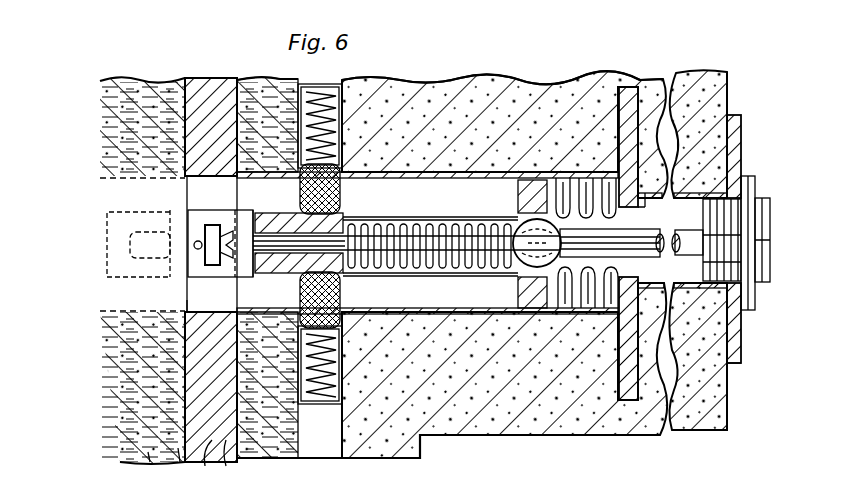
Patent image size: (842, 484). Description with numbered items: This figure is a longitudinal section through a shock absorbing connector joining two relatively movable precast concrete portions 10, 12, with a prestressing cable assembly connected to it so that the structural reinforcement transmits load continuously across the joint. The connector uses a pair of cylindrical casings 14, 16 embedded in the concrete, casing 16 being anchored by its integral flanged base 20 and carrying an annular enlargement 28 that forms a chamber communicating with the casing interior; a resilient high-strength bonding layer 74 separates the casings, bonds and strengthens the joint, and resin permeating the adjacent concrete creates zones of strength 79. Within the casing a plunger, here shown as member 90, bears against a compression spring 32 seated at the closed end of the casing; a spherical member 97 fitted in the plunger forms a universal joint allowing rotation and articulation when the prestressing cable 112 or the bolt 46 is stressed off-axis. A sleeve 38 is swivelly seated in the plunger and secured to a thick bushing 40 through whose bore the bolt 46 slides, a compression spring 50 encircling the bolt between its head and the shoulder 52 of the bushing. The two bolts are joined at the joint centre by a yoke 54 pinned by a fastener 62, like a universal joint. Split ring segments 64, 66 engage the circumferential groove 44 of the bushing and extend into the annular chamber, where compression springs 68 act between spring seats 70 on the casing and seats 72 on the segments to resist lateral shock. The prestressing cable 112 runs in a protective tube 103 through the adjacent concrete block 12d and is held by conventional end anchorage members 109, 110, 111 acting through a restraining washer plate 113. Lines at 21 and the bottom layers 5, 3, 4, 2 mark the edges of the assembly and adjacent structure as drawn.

The portion 10 is at (128, 154).
The portion 12 is at (543, 84).
The concrete block 12d is at (726, 102).
The casing 14 is at (648, 186).
The casing 16 is at (490, 170).
The flanged base 20 is at (618, 132).
The sleeve edge 21 is at (186, 312).
The annular enlargement 28 is at (342, 140).
The compression spring 32 is at (566, 312).
The sleeve 38 is at (455, 212).
The bushing 40 is at (110, 212).
The circumferential groove 44 is at (320, 246).
The bolt member 46 is at (156, 268).
The compression spring 50 is at (510, 214).
The shoulder 52 is at (178, 214).
The yoke 54 is at (248, 224).
The fastening pin 62 is at (220, 224).
The ring segment 64 is at (344, 208).
The ring segment 66 is at (346, 304).
The compression spring 68 is at (342, 108).
The spring seat 70 is at (338, 76).
The spring seat 72 is at (343, 346).
The bonding layer 74 is at (222, 88).
The zone of strength 79 is at (168, 80).
The plunger member 90 is at (560, 176).
The spherical member 97 is at (514, 280).
The tube 103 is at (699, 367).
The end anchorage member 109 is at (744, 348).
The end anchorage member 110 is at (748, 306).
The end anchorage member 111 is at (782, 332).
The prestressing cable 112 is at (624, 255).
The restraining washer plate 113 is at (740, 163).
The layer 5 is at (144, 468).
The layer 3 is at (171, 466).
The layer 4 is at (203, 462).
The layer 2 is at (225, 462).